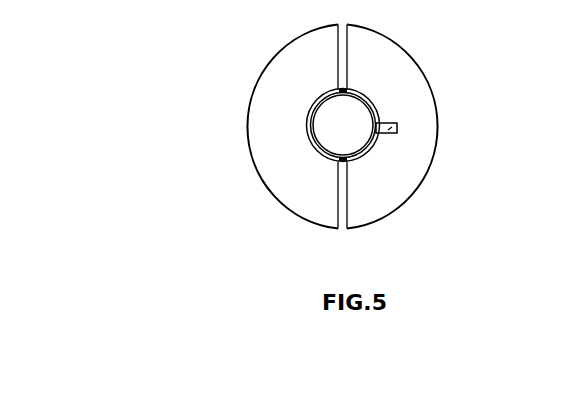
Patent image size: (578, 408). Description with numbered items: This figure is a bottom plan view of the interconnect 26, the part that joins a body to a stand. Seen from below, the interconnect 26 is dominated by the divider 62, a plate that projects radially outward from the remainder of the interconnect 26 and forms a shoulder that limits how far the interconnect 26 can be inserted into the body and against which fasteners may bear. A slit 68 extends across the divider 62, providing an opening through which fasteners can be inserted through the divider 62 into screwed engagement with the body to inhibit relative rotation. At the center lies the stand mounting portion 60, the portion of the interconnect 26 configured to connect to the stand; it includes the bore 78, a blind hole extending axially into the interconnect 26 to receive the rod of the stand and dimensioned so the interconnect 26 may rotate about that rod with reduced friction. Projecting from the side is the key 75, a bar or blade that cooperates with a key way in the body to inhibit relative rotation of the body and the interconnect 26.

The interconnect 26 is at (217, 108).
The stand mounting portion 60 is at (317, 160).
The divider 62 is at (388, 182).
The slit 68 is at (337, 55).
The key 75 is at (397, 123).
The bore 78 is at (368, 98).